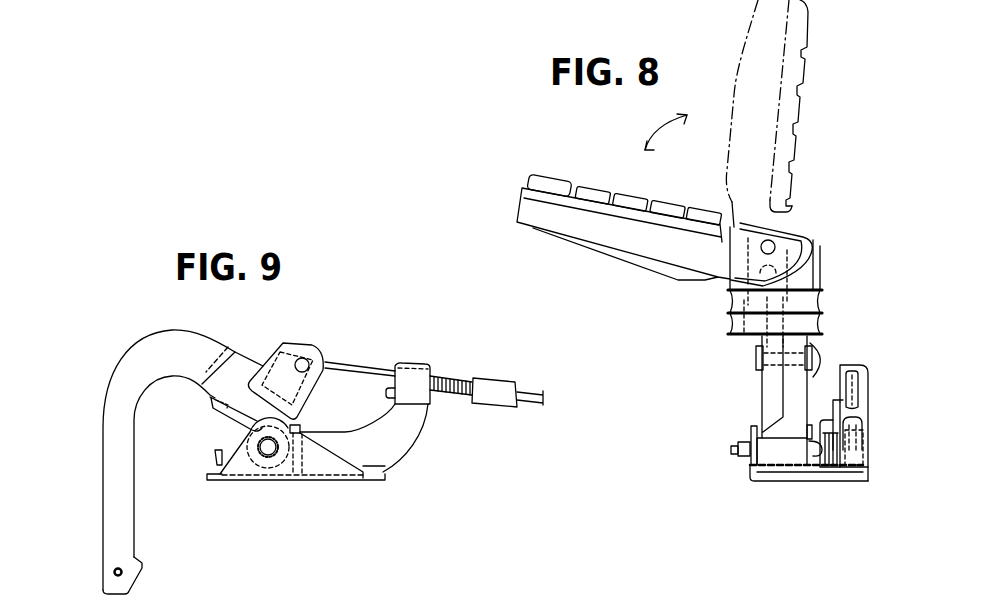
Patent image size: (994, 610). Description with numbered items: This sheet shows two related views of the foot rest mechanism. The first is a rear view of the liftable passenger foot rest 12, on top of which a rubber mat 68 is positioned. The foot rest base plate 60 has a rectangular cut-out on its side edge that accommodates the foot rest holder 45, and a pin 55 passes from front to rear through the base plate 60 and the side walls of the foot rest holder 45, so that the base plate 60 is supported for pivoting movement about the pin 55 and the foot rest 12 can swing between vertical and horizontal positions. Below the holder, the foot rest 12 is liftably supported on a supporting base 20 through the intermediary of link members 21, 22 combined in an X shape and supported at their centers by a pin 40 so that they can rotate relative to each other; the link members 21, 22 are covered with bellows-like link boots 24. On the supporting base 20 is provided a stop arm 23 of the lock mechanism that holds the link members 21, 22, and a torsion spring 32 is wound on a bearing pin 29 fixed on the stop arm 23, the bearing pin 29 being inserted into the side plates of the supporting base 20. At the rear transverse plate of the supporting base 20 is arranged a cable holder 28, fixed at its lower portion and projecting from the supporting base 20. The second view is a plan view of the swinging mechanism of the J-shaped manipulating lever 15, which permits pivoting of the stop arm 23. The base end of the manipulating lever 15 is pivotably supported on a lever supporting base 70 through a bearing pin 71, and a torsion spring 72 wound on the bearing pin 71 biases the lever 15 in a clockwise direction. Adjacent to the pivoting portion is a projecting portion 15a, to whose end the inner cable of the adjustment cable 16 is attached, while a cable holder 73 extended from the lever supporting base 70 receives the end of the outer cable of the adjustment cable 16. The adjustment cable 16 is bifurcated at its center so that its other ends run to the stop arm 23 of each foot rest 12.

In FIG. 8, the passenger foot rest 12 is at (595, 194).
In FIG. 8, the rubber mat 68 is at (593, 186).
In FIG. 8, the foot rest base plate 60 is at (518, 208).
In FIG. 8, the pin 55 is at (773, 231).
In FIG. 8, the foot rest holder 45 is at (816, 268).
In FIG. 8, the pin 40 is at (823, 340).
In FIG. 8, the link boot 24 is at (730, 324).
In FIG. 8, the link member 22 is at (819, 373).
In FIG. 8, the link member 21 is at (761, 388).
In FIG. 8, the bearing pin 29 is at (738, 453).
In FIG. 8, the supporting base 20 is at (783, 485).
In FIG. 8, the stop arm 23 is at (869, 390).
In FIG. 8, the torsion spring 32 is at (868, 415).
In FIG. 8, the cable holder 28 is at (870, 430).
In FIG. 9, the manipulating lever 15 is at (102, 470).
In FIG. 9, the projecting portion 15a is at (345, 343).
In FIG. 9, the torsion spring 72 is at (218, 415).
In FIG. 9, the bearing pin 71 is at (269, 460).
In FIG. 9, the lever supporting base 70 is at (325, 465).
In FIG. 9, the cable holder 73 is at (422, 435).
In FIG. 9, the adjustment cable 16 is at (530, 392).